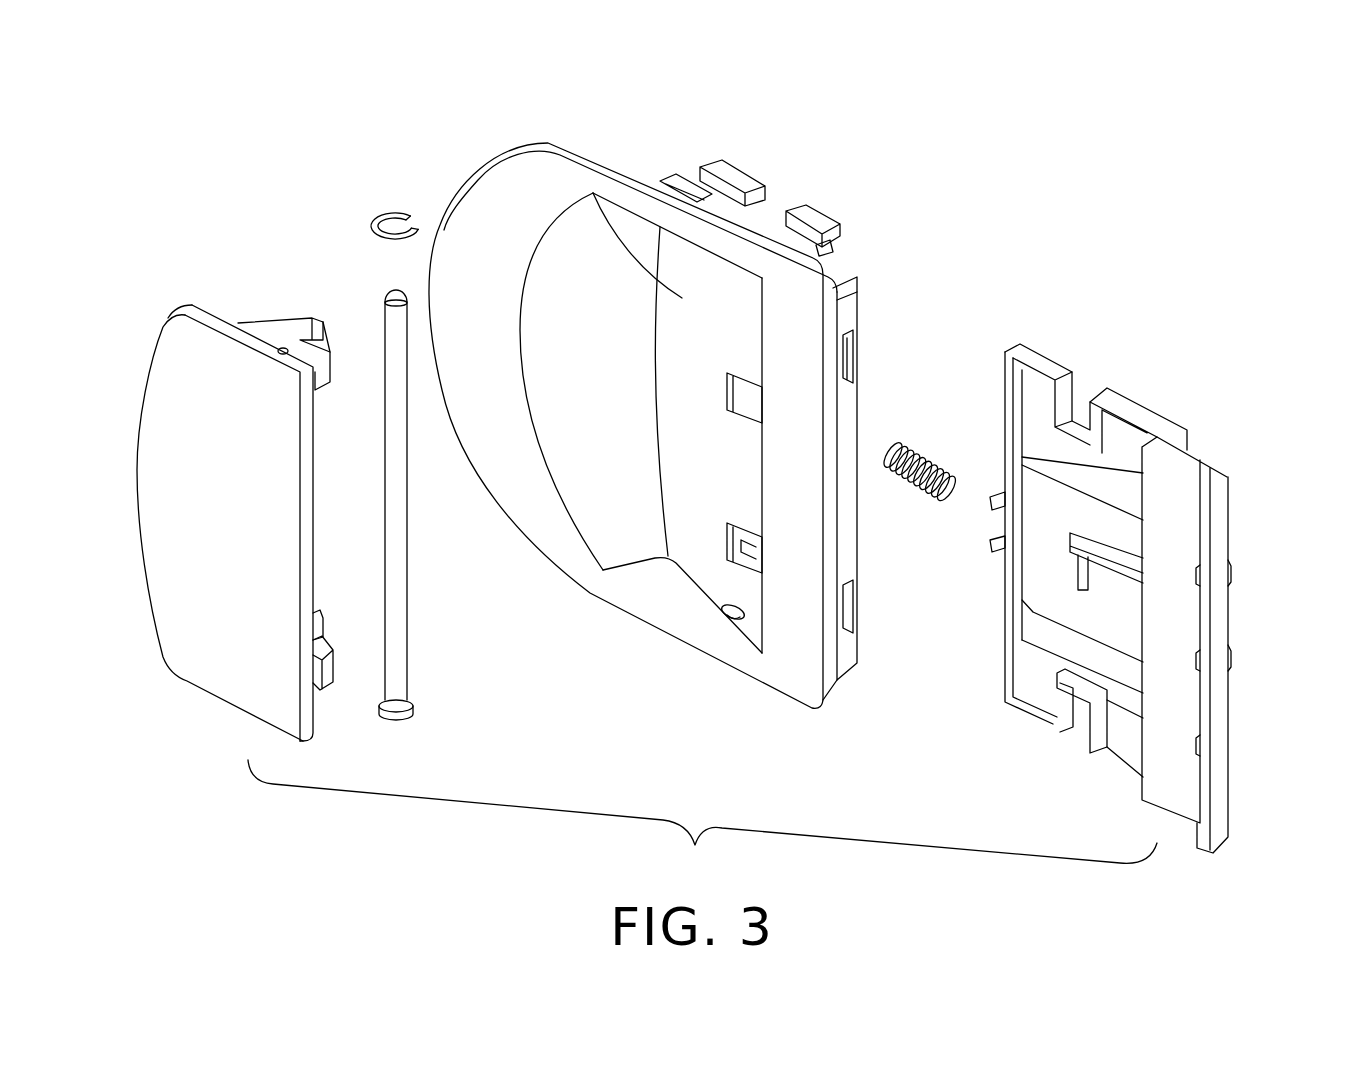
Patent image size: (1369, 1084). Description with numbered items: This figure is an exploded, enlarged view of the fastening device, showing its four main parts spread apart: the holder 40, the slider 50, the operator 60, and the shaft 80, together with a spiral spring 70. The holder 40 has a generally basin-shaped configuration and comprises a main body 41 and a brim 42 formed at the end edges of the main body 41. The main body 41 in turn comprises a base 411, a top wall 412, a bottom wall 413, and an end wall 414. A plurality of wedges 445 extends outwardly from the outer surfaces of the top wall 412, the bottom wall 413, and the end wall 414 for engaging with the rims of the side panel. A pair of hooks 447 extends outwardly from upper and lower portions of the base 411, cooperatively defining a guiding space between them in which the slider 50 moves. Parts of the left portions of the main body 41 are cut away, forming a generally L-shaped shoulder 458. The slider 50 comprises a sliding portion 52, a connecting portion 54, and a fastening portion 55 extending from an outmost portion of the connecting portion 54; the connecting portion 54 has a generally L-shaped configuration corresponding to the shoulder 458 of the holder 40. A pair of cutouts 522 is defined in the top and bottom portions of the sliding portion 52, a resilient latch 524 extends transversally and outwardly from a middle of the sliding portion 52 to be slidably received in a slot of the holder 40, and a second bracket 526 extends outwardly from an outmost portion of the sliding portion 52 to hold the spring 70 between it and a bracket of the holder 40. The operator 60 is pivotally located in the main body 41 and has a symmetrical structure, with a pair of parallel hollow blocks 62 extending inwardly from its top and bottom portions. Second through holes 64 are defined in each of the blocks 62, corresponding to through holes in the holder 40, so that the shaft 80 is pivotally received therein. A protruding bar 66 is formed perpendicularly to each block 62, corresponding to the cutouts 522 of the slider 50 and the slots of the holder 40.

The holder 40 is at (767, 165).
The main body 41 is at (577, 438).
The brim 42 is at (487, 192).
The base 411 is at (680, 297).
The top wall 412 is at (782, 228).
The bottom wall 413 is at (662, 577).
The end wall 414 is at (840, 330).
The wedges 445 is at (678, 186).
The hooks 447 is at (820, 222).
The L-shaped shoulder 458 is at (832, 255).
The slider 50 is at (1130, 383).
The sliding portion 52 is at (1045, 485).
The connecting portion 54 is at (1177, 483).
The fastening portion 55 is at (1218, 543).
The cutouts 522 is at (1063, 723).
The resilient latch 524 is at (1065, 572).
The second bracket 526 is at (1002, 540).
The operator 60 is at (170, 298).
The hollow blocks 62 is at (285, 337).
The second through holes 64 is at (283, 351).
The protruding bar 66 is at (318, 320).
The spiral spring 70 is at (912, 445).
The shaft 80 is at (420, 628).